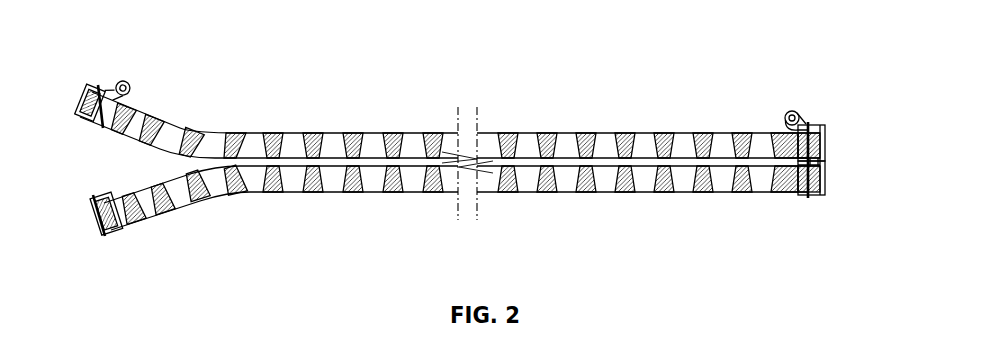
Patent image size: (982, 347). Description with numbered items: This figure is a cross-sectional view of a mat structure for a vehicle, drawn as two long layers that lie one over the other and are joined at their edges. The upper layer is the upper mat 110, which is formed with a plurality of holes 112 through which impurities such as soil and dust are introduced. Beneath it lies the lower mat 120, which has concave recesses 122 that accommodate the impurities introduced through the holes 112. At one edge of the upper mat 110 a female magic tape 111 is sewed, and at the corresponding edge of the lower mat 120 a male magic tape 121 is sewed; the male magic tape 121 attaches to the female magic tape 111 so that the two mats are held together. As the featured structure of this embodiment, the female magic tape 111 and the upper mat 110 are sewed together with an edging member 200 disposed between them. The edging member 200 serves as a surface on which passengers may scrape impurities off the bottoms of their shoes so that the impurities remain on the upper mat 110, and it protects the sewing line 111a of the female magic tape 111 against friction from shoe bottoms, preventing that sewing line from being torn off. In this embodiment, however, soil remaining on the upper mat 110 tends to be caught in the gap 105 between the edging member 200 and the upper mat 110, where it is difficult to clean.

The upper mat 110 is at (539, 127).
The lower mat 120 is at (539, 201).
The holes 112 is at (684, 134).
The concave recesses 122 is at (686, 193).
The gap 105 is at (786, 130).
The edging member 200 is at (801, 98).
The female magic tape 111 is at (826, 125).
The sewing line 111a is at (825, 148).
The male magic tape 121 is at (825, 198).